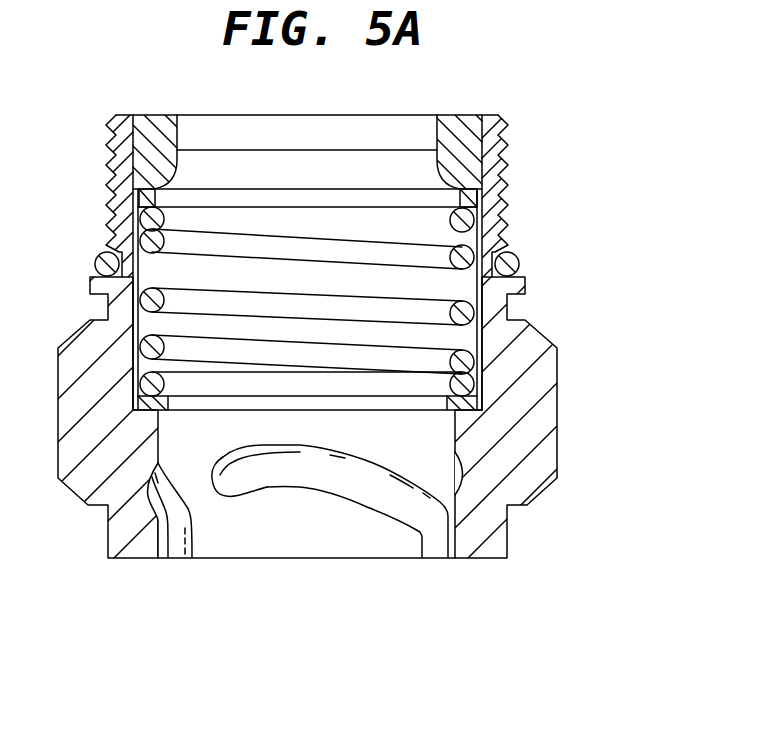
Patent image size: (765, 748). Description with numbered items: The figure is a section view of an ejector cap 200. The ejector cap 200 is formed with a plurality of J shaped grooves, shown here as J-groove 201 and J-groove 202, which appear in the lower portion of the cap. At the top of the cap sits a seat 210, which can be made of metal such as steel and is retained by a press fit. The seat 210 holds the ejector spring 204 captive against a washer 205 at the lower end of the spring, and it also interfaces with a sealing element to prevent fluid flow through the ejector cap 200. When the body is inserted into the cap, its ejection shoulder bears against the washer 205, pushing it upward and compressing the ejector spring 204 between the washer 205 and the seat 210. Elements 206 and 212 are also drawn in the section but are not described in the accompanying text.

The ejector cap 200 is at (499, 542).
The J-groove 201 is at (192, 528).
The J-groove 202 is at (380, 490).
The ejector spring 204 is at (393, 307).
The washer 205 is at (315, 400).
The O-ring 206 is at (519, 264).
The seat 210 is at (461, 130).
The retainer 212 is at (463, 197).